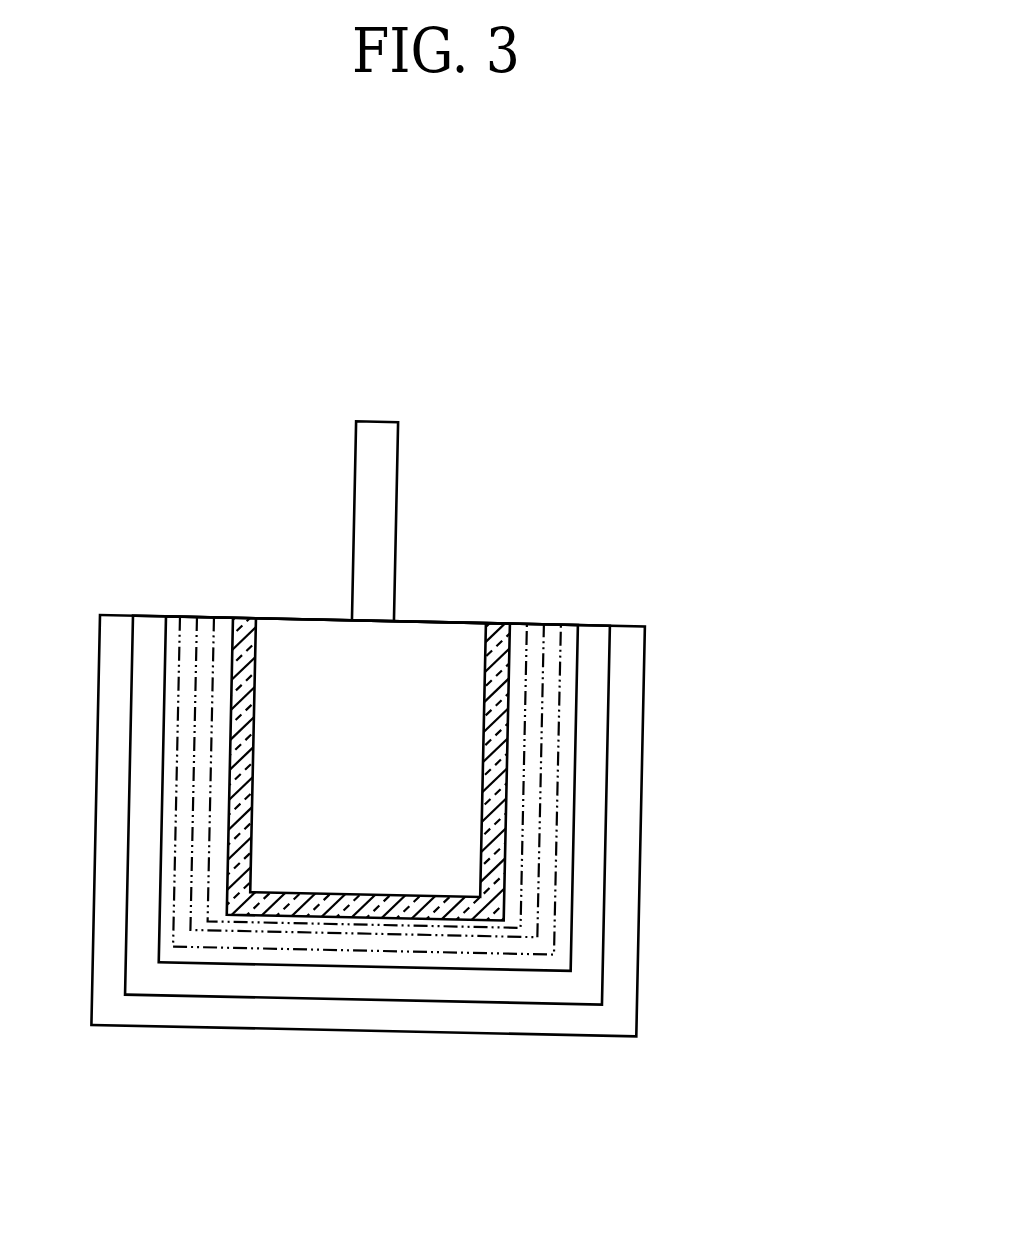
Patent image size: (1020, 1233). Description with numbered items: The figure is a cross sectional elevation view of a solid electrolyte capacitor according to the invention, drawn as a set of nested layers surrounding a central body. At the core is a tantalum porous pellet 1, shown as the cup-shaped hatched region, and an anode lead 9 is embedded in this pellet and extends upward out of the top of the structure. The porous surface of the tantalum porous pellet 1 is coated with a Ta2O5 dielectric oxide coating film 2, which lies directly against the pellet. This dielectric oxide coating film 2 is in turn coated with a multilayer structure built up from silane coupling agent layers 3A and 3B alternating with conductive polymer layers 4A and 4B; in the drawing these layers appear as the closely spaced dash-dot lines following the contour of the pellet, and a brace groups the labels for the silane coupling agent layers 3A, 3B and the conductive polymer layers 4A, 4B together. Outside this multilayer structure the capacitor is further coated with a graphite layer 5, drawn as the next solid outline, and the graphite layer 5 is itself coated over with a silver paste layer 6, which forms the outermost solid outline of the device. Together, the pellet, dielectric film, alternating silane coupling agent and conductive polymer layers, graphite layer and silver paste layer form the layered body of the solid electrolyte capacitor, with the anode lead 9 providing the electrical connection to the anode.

The tantalum porous pellet 1 is at (274, 712).
The Ta2O5 dielectric oxide coating film 2 is at (236, 784).
The silane coupling agent layer 3A is at (581, 613).
The conductive polymer layer 4A is at (445, 726).
The silane coupling agent layer 3B is at (490, 735).
The conductive polymer layer 4B is at (530, 743).
The graphite layer 5 is at (601, 723).
The silver paste layer 6 is at (632, 800).
The anode lead 9 is at (385, 452).